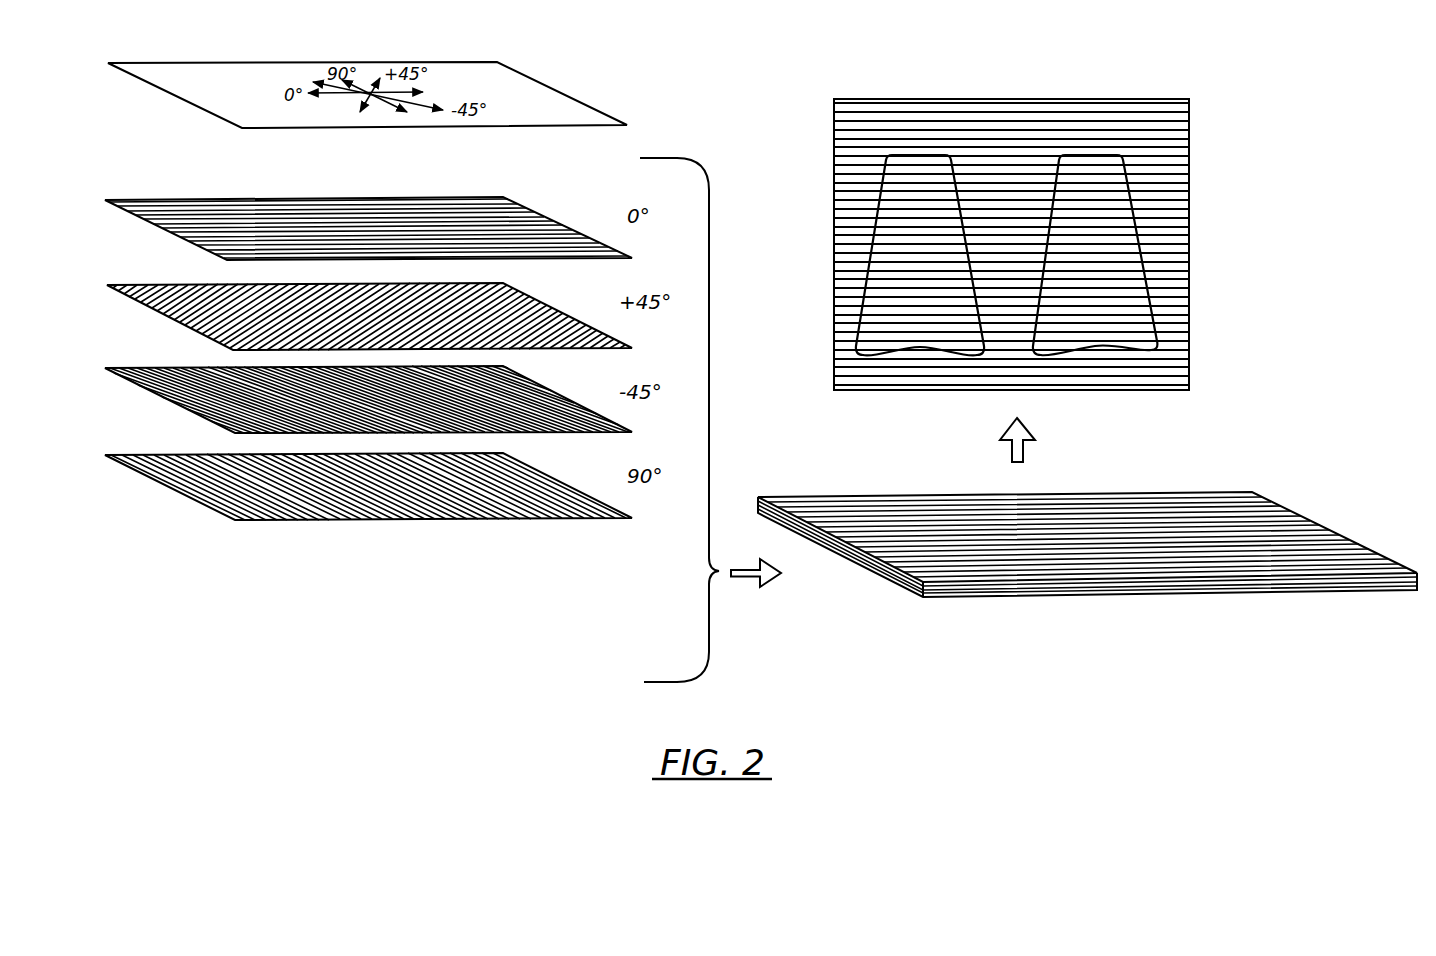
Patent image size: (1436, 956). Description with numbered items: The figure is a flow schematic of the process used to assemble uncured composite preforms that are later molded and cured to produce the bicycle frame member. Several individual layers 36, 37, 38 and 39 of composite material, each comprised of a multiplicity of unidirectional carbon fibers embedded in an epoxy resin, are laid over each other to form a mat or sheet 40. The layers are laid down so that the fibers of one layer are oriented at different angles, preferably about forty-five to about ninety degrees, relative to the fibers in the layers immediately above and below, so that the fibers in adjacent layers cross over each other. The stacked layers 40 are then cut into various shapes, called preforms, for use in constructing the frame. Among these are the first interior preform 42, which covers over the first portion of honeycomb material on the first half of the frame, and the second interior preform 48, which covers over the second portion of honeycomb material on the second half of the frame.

The individual layer 36 is at (140, 200).
The individual layer 37 is at (140, 285).
The individual layer 38 is at (140, 368).
The individual layer 39 is at (140, 455).
The mat or sheet 40 is at (1190, 165).
The interior preform 42 is at (922, 152).
The second interior preform 48 is at (1090, 152).